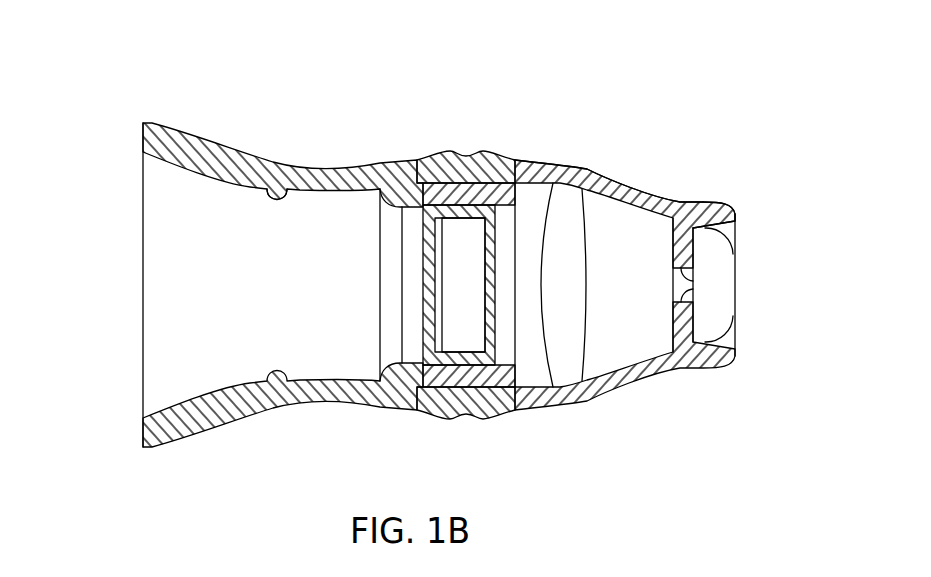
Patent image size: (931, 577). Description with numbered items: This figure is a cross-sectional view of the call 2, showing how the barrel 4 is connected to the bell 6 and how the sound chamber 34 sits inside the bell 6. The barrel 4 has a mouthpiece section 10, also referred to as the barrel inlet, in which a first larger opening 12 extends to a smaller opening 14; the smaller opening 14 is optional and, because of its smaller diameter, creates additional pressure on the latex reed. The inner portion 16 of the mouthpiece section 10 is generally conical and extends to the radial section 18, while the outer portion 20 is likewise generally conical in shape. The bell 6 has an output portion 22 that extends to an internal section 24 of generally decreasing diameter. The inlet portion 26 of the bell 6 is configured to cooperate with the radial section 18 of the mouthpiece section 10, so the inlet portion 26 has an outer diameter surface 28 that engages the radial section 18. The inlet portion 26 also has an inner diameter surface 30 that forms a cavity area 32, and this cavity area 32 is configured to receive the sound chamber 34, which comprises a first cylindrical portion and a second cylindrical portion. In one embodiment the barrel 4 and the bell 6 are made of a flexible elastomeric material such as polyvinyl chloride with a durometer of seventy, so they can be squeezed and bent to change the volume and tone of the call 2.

The call 2 is at (643, 110).
The barrel 4 is at (645, 185).
The bell 6 is at (240, 162).
The mouthpiece section 10 is at (730, 210).
The first larger opening 12 is at (735, 248).
The smaller opening 14 is at (693, 287).
The inner portion 16 is at (638, 348).
The radial section 18 is at (448, 378).
The outer portion 20 is at (613, 178).
The output portion 22 is at (142, 430).
The internal section 24 is at (280, 190).
The inlet portion 26 is at (458, 207).
The outer diameter surface 28 is at (487, 180).
The inner diameter surface 30 is at (470, 350).
The cavity area 32 is at (520, 338).
The sound chamber 34 is at (485, 362).